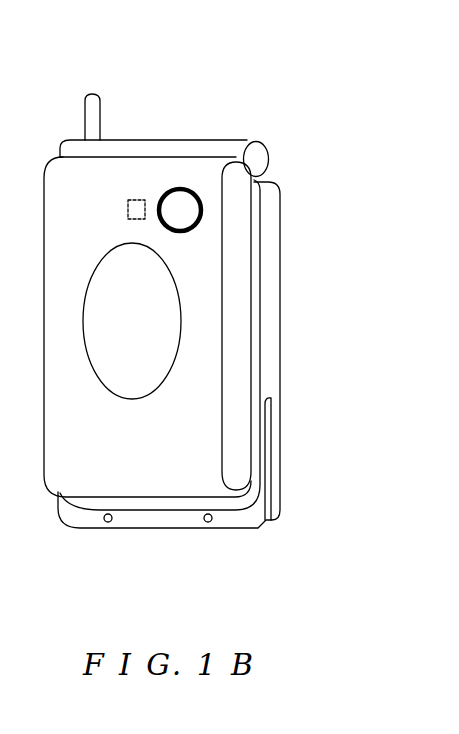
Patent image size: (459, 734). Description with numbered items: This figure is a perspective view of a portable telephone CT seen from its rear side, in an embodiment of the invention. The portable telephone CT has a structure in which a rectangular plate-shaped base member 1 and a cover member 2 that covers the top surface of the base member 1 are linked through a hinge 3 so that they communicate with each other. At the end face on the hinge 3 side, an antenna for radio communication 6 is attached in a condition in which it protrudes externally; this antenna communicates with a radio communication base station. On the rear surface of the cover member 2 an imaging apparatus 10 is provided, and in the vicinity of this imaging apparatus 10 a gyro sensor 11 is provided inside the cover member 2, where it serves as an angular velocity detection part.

The portable telephone CT is at (198, 118).
The base member 1 is at (281, 253).
The cover member 2 is at (254, 300).
The hinge 3 is at (270, 160).
The antenna for radio communication 6 is at (92, 93).
The imaging apparatus 10 is at (195, 208).
The gyro sensor 11 is at (133, 200).